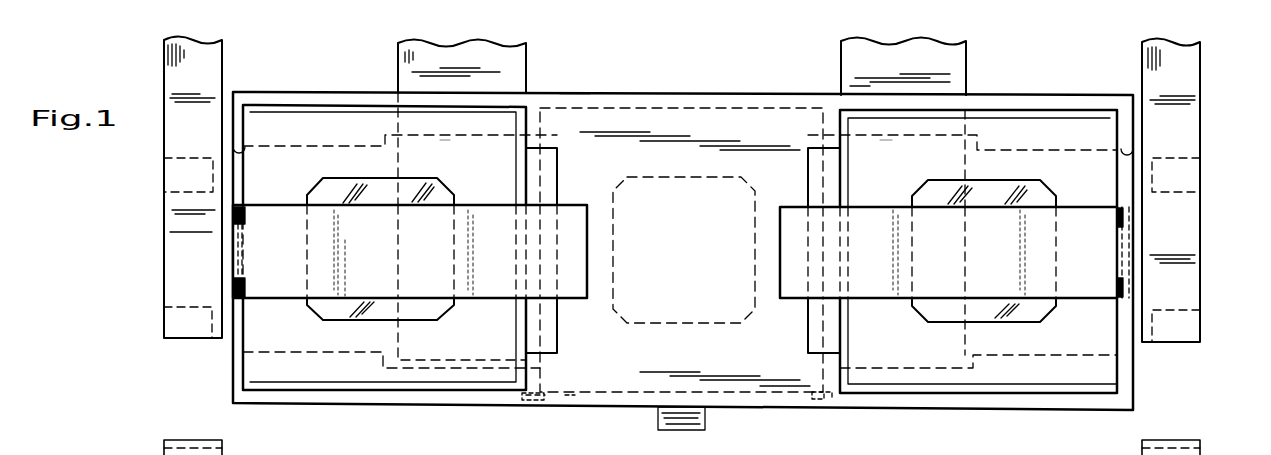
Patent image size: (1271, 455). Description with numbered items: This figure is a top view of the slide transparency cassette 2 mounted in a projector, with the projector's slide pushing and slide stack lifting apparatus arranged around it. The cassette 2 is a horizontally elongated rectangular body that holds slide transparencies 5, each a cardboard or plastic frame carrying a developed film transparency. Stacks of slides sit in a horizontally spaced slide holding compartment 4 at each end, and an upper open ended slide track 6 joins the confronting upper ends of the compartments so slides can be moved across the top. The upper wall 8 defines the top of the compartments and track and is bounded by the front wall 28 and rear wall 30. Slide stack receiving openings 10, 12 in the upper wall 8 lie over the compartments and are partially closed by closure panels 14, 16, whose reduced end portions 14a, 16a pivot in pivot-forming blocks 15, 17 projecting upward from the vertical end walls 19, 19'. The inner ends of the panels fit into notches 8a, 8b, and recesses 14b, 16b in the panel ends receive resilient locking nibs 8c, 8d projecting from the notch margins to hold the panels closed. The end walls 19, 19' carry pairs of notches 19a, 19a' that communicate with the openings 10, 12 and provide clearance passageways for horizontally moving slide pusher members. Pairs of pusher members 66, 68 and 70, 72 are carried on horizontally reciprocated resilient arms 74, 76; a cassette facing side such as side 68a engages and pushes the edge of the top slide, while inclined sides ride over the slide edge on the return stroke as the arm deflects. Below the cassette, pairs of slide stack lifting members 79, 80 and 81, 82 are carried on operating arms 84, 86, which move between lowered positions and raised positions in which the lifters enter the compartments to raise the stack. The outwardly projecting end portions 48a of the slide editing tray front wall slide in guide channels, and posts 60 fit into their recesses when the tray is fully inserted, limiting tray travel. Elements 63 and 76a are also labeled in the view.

The slide transparency cassette 2 is at (302, 88).
The slide holding compartment 4 is at (405, 65).
The slide transparency 5 is at (700, 63).
The upper open ended slide track 6 is at (757, 454).
The upper wall 8 is at (728, 118).
The notch 8a is at (585, 300).
The notch 8b is at (785, 385).
The resilient locking nib 8c is at (582, 250).
The resilient locking nib 8d is at (849, 258).
The slide stack receiving opening 10 is at (412, 106).
The slide stack receiving opening 12 is at (1033, 115).
The closure panel 14 is at (365, 213).
The reduced end portion 14a is at (238, 245).
The recess 14b is at (590, 255).
The pivot-forming block 15 is at (233, 213).
The closure panel 16 is at (1010, 215).
The reduced end portion 16a is at (1125, 247).
The recess 16b is at (780, 255).
The pivot-forming block 17 is at (1125, 216).
The vertical end wall 19 is at (345, 247).
The vertical end wall 19' is at (1024, 256).
The notch 19a is at (395, 257).
The notch 19a' is at (1026, 253).
The front wall 28 is at (772, 410).
The rear wall 30 is at (575, 97).
The outwardly projecting end portion 48a is at (530, 401).
The post 60 is at (565, 394).
The tab 63 is at (657, 418).
The slide pusher member 66 is at (180, 178).
The slide pusher member 68 is at (180, 320).
The cassette facing side 68a is at (225, 451).
The slide pusher member 70 is at (1205, 180).
The slide pusher member 72 is at (1185, 330).
The resilient arm 74 is at (168, 78).
The resilient arm 76 is at (1202, 100).
The strip end 76a is at (1140, 452).
The slide stack lifting member 79 is at (445, 133).
The slide stack lifting member 80 is at (437, 362).
The slide stack lifting member 81 is at (886, 135).
The slide stack lifting member 82 is at (860, 395).
The operating arm 84 is at (527, 60).
The operating arm 86 is at (967, 72).